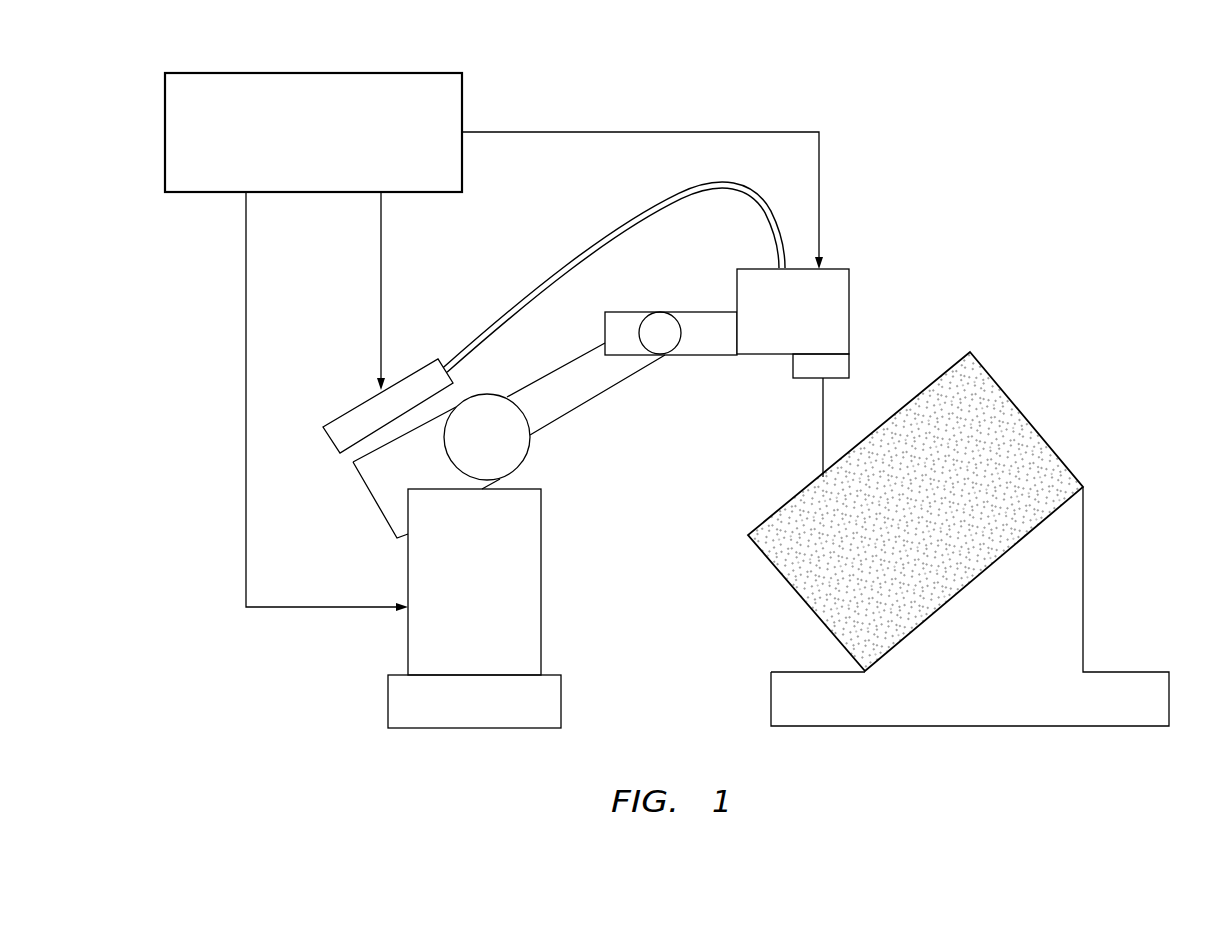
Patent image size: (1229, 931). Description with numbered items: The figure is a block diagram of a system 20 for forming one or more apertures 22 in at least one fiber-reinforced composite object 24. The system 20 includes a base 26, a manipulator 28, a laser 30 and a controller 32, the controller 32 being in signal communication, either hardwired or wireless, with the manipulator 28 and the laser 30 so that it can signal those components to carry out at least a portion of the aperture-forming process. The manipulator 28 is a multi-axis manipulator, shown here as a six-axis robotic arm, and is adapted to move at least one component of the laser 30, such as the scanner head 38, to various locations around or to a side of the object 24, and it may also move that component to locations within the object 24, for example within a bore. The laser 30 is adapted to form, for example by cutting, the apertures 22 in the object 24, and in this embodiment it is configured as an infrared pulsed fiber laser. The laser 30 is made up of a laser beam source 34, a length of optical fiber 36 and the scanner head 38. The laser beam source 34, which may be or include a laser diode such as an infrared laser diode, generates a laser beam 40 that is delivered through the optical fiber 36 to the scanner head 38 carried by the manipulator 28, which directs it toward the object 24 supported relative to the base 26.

The system 20 is at (1013, 120).
The apertures 22 is at (997, 401).
The fiber-reinforced composite object 24 is at (979, 346).
The base 26 is at (969, 686).
The manipulator 28 is at (598, 443).
The laser 30 is at (539, 254).
The controller 32 is at (292, 148).
The laser beam source 34 is at (343, 412).
The optical fiber 36 is at (493, 332).
The scanner head 38 is at (803, 328).
The laser beam 40 is at (823, 423).